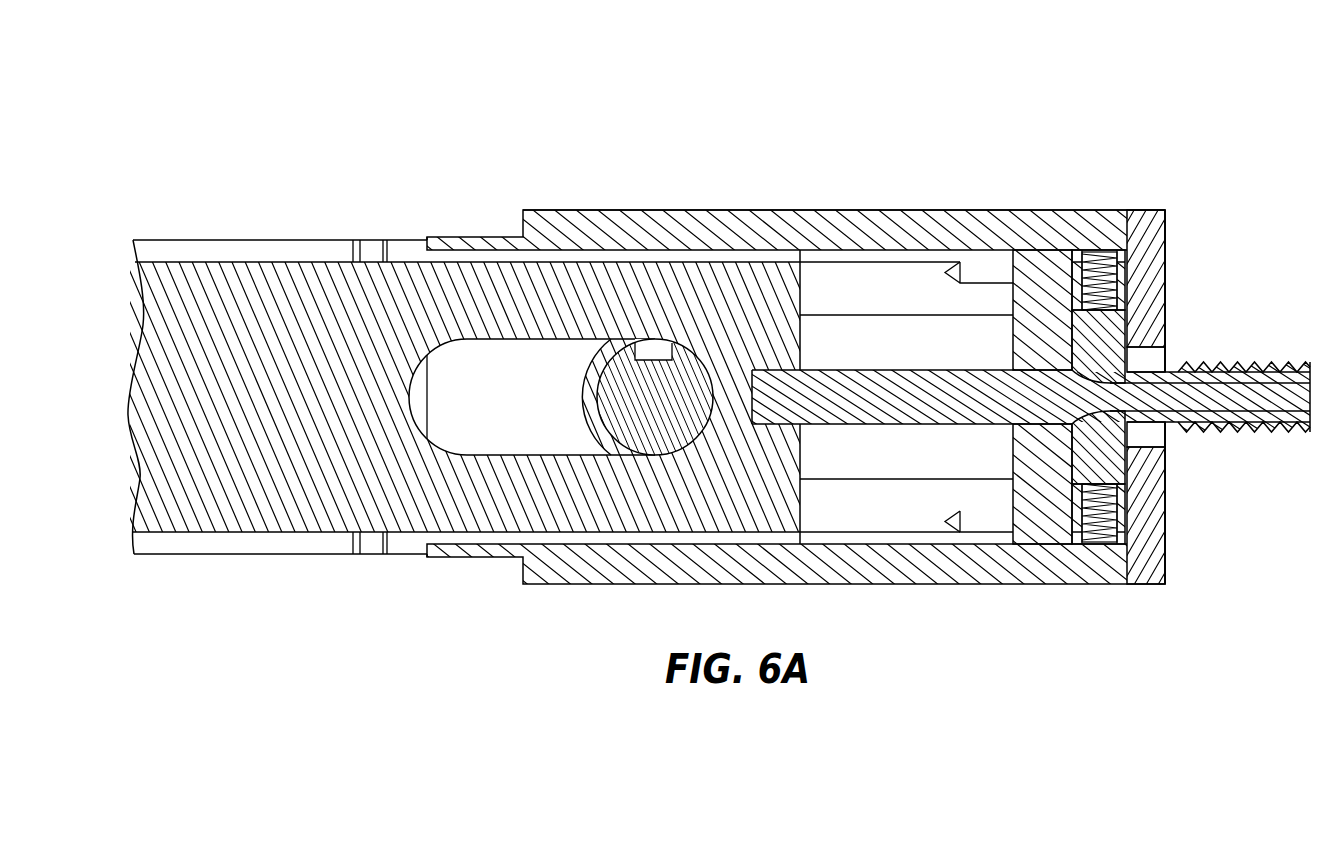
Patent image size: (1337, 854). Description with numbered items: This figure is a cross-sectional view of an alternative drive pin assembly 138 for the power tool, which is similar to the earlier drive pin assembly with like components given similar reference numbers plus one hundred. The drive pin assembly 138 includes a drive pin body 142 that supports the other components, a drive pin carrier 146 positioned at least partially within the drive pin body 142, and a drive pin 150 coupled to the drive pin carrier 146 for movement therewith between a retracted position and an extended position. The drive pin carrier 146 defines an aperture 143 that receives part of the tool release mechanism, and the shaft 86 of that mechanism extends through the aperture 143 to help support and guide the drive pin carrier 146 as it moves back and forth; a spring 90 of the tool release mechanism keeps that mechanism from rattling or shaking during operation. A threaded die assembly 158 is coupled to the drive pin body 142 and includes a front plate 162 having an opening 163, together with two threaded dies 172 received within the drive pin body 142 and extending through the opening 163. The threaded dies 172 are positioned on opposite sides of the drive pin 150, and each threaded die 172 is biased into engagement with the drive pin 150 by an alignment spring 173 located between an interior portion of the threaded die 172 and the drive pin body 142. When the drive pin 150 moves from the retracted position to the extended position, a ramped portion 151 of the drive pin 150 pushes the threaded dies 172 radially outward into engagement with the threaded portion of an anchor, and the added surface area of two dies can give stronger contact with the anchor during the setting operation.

The drive pin assembly 138 is at (694, 114).
The drive pin body 142 is at (620, 240).
The spring 90 is at (578, 396).
The drive pin 150 is at (875, 393).
The alignment spring 173 is at (1103, 250).
The front plate 162 is at (1147, 238).
The threaded die assembly 158 is at (1256, 196).
The opening 163 is at (1150, 357).
The threaded die 172 is at (1240, 360).
The drive pin carrier 146 is at (283, 498).
The aperture 143 is at (482, 460).
The shaft 86 is at (663, 428).
The ramped portion 151 is at (1093, 400).